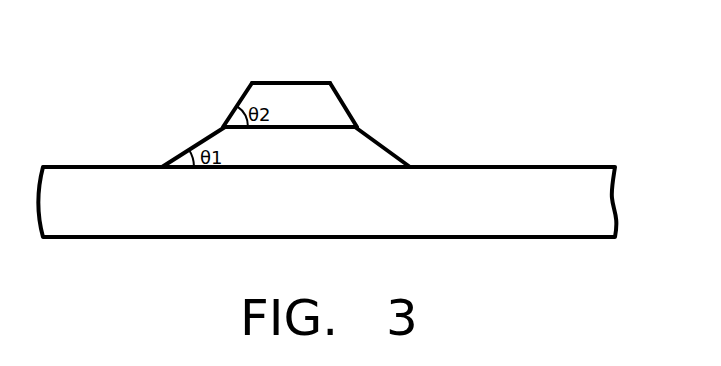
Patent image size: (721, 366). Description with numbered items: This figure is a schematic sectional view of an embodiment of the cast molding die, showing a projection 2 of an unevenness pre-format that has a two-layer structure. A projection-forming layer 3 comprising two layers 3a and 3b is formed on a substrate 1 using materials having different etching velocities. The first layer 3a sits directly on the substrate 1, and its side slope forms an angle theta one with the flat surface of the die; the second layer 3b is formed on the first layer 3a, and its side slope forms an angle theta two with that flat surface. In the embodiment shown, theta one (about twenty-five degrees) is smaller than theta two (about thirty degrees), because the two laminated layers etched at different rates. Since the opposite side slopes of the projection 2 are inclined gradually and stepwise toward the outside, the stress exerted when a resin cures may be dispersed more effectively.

The substrate 1 is at (598, 207).
The projection 2 is at (300, 83).
The projection-forming layer 3 is at (321, 114).
The first layer 3a is at (380, 145).
The second layer 3b is at (347, 106).